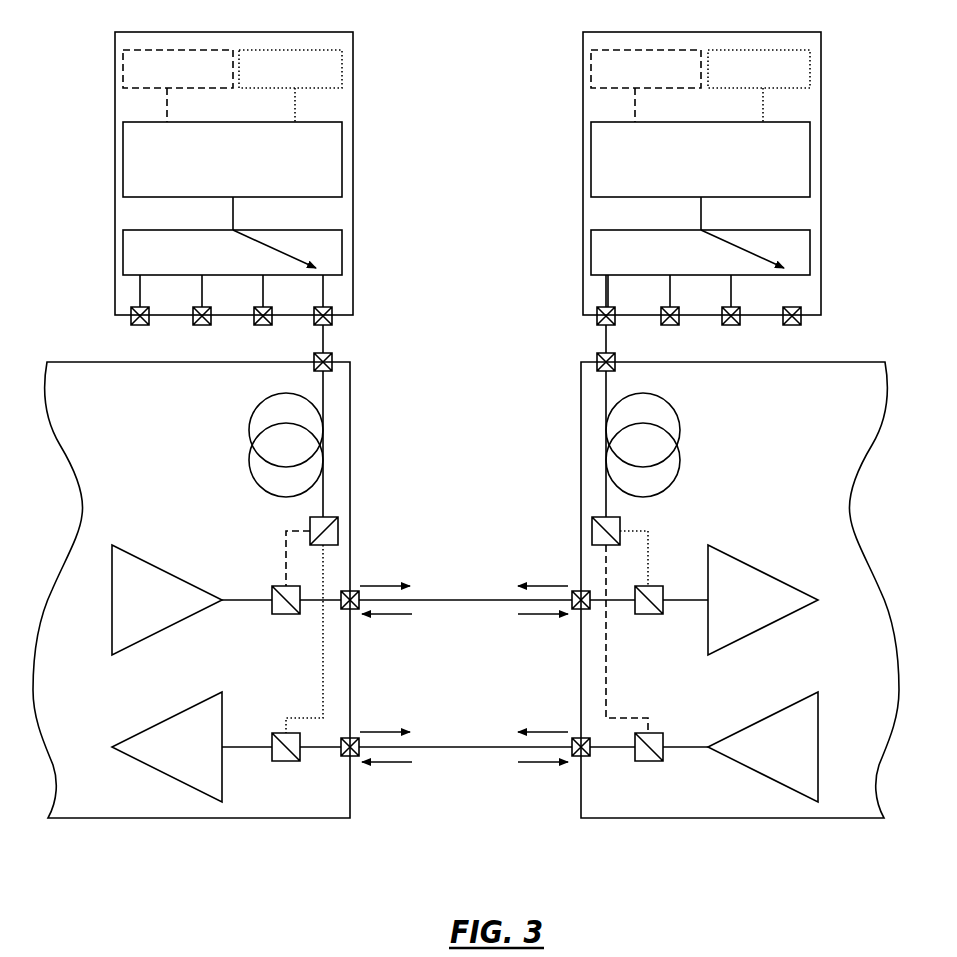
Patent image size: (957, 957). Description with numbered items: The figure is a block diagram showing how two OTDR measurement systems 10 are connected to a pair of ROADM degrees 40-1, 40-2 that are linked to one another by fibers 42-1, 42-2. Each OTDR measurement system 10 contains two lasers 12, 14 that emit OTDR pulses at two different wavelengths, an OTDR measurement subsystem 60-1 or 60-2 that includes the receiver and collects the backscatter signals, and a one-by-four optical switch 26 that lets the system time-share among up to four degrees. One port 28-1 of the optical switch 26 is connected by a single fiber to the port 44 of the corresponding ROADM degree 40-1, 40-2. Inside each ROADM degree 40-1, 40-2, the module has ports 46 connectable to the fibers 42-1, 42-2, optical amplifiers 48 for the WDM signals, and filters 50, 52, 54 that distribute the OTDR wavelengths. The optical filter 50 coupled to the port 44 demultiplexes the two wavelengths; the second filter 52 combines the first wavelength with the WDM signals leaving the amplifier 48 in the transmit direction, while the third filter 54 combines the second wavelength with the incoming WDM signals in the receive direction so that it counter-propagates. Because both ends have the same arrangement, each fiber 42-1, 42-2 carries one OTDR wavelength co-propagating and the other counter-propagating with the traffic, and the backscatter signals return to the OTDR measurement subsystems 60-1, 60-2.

The OTDR measurement system 10 is at (354, 62).
The laser 12 is at (179, 50).
The laser 14 is at (272, 50).
The optical switch 26 is at (343, 262).
The port 28-1 is at (332, 308).
The ROADM degree 40-1 is at (108, 818).
The ROADM degree 40-2 is at (850, 818).
The fiber 42-1 is at (440, 598).
The fiber 42-2 is at (440, 746).
The port 44 is at (332, 356).
The ports 46 is at (359, 555).
The optical amplifier 48 is at (175, 580).
The optical filter 50 is at (333, 517).
The second filter 52 is at (270, 612).
The third filter 54 is at (276, 761).
The OTDR measurement subsystem 60-1 is at (343, 168).
The OTDR measurement subsystem 60-2 is at (811, 168).